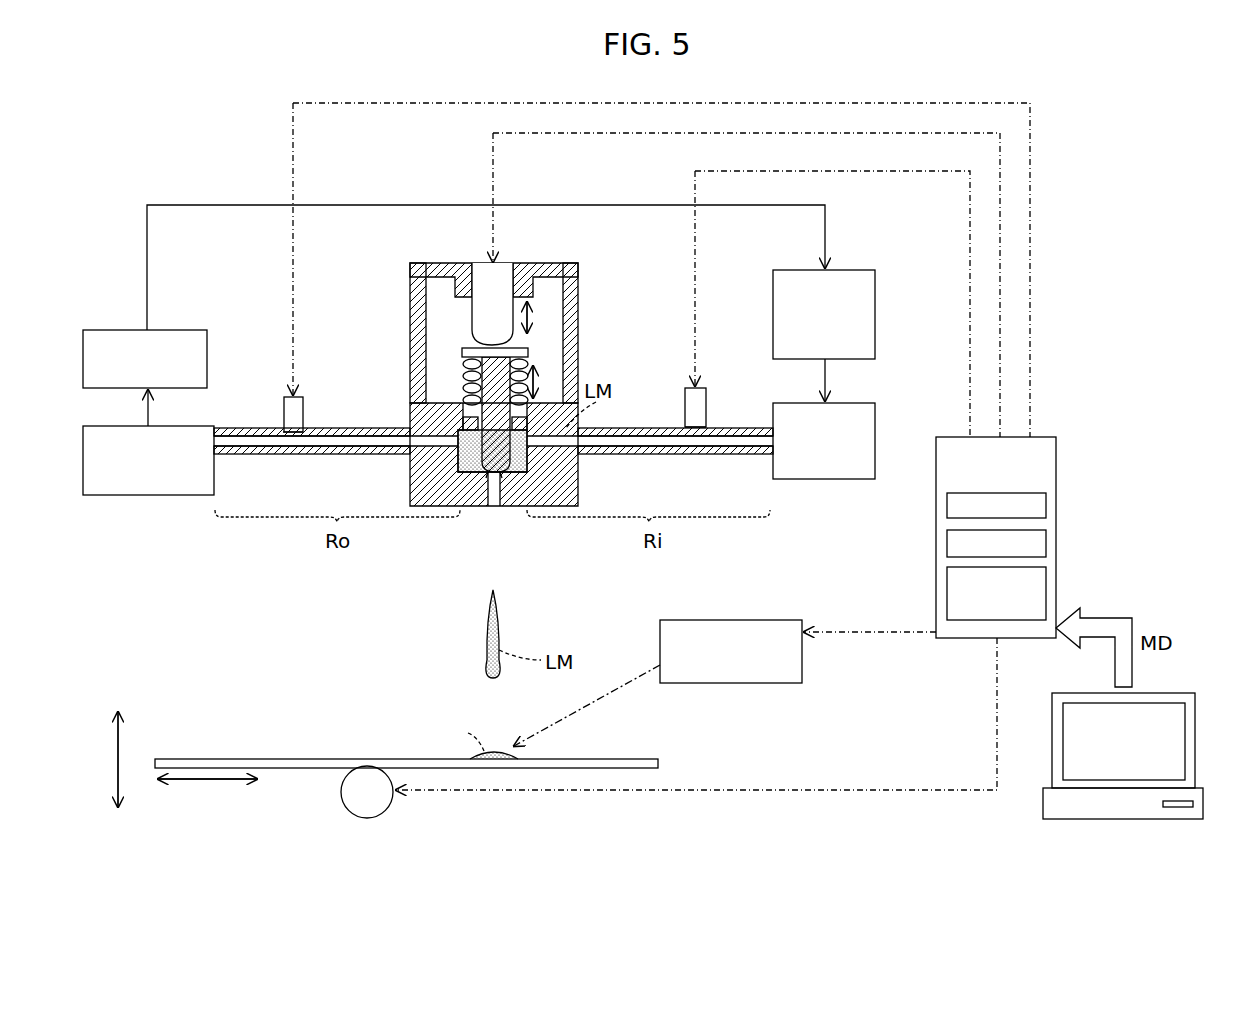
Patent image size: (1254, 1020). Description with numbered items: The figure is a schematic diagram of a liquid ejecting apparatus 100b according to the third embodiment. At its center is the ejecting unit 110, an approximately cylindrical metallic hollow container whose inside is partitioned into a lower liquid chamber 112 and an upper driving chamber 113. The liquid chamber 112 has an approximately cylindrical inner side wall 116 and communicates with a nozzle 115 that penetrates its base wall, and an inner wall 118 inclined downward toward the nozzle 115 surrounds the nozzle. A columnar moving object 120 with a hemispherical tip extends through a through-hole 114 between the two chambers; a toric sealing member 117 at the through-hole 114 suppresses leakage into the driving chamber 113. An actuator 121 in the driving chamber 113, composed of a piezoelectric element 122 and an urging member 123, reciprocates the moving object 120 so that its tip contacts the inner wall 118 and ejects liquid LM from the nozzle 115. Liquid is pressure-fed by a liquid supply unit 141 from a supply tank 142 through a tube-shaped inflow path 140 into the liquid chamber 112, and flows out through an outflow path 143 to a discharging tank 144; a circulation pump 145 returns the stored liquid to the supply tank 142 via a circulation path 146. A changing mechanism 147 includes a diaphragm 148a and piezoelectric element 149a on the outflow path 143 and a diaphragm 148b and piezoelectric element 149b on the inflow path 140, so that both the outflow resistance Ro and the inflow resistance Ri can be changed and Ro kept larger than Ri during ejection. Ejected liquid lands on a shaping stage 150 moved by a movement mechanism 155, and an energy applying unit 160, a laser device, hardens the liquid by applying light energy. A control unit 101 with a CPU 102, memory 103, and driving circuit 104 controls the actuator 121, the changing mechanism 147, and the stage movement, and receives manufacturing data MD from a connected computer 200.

The liquid ejecting apparatus 100b is at (1103, 147).
The control unit 101 is at (1028, 520).
The CPU 102 is at (1046, 506).
The memory 103 is at (1046, 544).
The driving circuit 104 is at (1046, 596).
The ejecting unit 110 is at (470, 392).
The liquid chamber 112 is at (560, 488).
The driving chamber 113 is at (548, 303).
The through-hole 114 is at (466, 396).
The nozzle 115 is at (491, 507).
The inner side wall 116 is at (522, 458).
The sealing member 117 is at (468, 422).
The inner wall 118 is at (456, 470).
The moving object 120 is at (462, 351).
The actuator 121 is at (421, 330).
The piezoelectric element 122 is at (478, 318).
The urging member 123 is at (470, 380).
The inflow path 140 is at (701, 456).
The liquid supply unit 141 is at (838, 402).
The supply tank 142 is at (838, 269).
The outflow path 143 is at (296, 456).
The discharging tank 144 is at (165, 496).
The circulation pump 145 is at (133, 329).
The circulation path 146 is at (219, 204).
The changing mechanism 147 is at (448, 348).
The diaphragm 148a is at (284, 432).
The piezoelectric element 149a is at (284, 430).
The diaphragm 148b is at (684, 427).
The piezoelectric element 149b is at (685, 420).
The shaping stage 150 is at (640, 758).
The movement mechanism 155 is at (345, 805).
The energy applying unit 160 is at (733, 619).
The computer 200 is at (1150, 693).